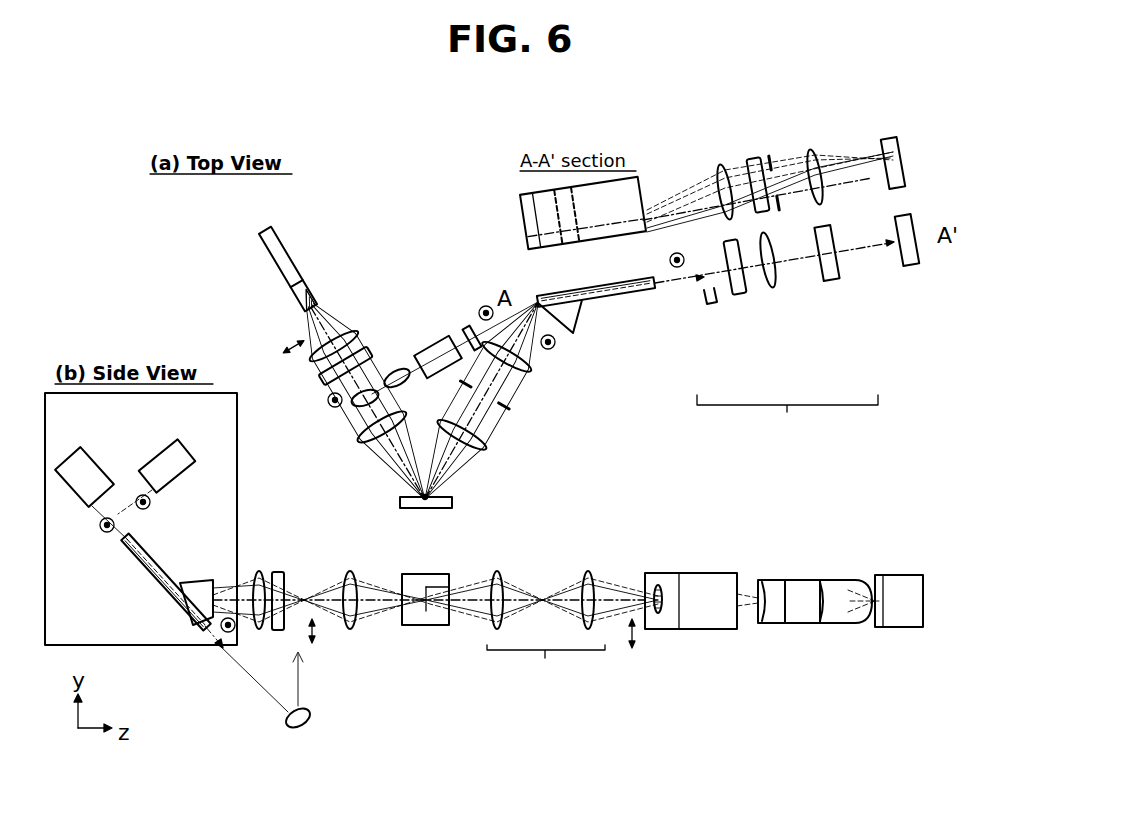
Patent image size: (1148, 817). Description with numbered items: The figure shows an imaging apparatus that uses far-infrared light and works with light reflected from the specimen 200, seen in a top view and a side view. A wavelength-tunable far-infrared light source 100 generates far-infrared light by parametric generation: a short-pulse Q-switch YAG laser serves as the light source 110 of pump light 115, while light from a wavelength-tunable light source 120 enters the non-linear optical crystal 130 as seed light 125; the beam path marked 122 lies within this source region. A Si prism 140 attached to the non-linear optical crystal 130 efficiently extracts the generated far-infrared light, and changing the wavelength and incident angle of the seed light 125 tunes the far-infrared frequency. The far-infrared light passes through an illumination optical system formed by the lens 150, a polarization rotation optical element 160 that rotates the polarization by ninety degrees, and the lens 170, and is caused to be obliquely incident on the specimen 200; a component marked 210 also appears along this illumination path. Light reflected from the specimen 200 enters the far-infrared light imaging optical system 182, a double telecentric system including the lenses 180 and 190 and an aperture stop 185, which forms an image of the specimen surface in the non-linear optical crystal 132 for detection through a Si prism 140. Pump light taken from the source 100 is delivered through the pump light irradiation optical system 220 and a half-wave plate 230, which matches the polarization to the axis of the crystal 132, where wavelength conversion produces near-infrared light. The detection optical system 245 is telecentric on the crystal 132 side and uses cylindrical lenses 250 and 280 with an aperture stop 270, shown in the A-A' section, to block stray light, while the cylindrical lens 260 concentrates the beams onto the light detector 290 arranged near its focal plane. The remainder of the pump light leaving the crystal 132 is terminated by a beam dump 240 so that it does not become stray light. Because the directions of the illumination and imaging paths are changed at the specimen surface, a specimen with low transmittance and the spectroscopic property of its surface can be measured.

The wavelength-tunable far-infrared light source 100 is at (125, 645).
The light source 110 is at (82, 452).
The pump light 115 is at (91, 533).
The wavelength-tunable light source 120 is at (175, 450).
The optical axis 122 is at (112, 508).
The seed light 125 is at (135, 508).
The non-linear optical crystal 130 is at (270, 257).
The non-linear optical crystal for detection 132 is at (536, 300).
The Si prism 140 is at (308, 288).
The lens 150 is at (258, 568).
The polarization rotation optical element 160 is at (278, 570).
The lens 170 is at (357, 453).
The lens 180 is at (503, 568).
The far-infrared light imaging optical system 182 is at (546, 669).
The aperture stop 185 is at (540, 565).
The lens 190 is at (590, 568).
The specimen 200 is at (418, 510).
The beam splitter 210 is at (348, 407).
The pump light irradiation optical system 220 is at (425, 343).
The half-wave plate 230 is at (467, 328).
The beam dump 240 is at (713, 308).
The detection optical system 245 is at (787, 420).
The cylindrical lens 250 is at (745, 297).
The cylindrical lens 260 is at (777, 290).
The aperture stop 270 is at (768, 153).
The cylindrical lens 280 is at (830, 283).
The light detector 290 is at (910, 265).